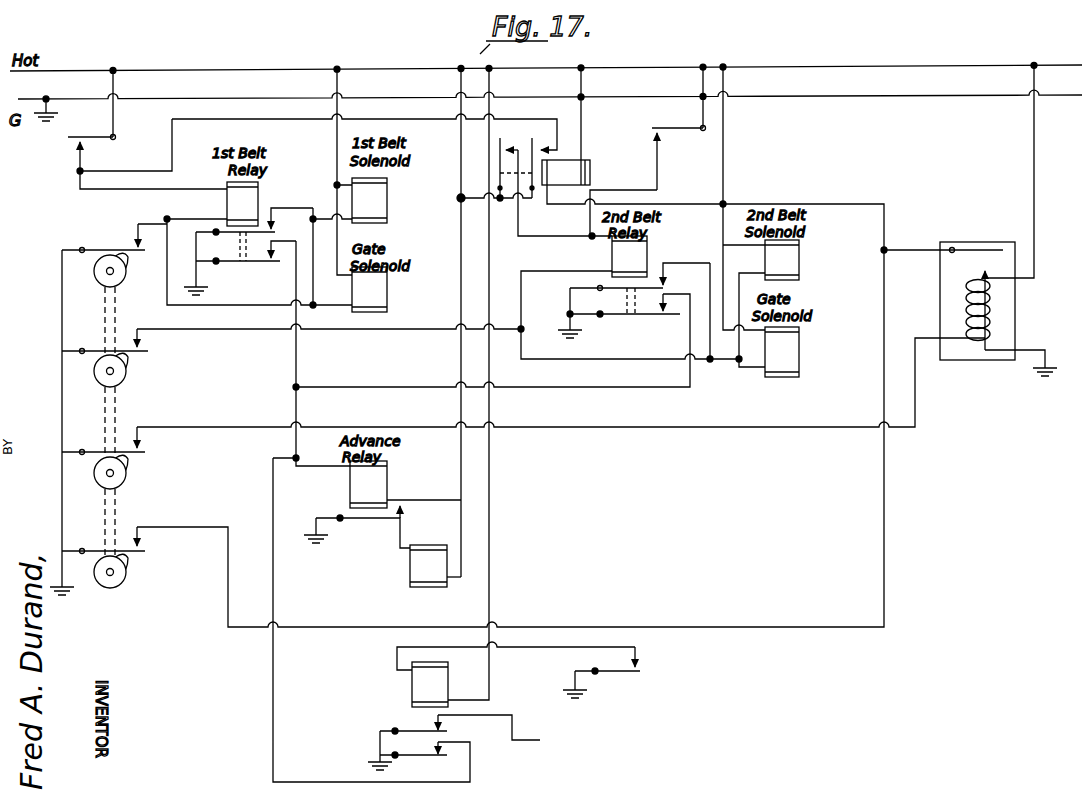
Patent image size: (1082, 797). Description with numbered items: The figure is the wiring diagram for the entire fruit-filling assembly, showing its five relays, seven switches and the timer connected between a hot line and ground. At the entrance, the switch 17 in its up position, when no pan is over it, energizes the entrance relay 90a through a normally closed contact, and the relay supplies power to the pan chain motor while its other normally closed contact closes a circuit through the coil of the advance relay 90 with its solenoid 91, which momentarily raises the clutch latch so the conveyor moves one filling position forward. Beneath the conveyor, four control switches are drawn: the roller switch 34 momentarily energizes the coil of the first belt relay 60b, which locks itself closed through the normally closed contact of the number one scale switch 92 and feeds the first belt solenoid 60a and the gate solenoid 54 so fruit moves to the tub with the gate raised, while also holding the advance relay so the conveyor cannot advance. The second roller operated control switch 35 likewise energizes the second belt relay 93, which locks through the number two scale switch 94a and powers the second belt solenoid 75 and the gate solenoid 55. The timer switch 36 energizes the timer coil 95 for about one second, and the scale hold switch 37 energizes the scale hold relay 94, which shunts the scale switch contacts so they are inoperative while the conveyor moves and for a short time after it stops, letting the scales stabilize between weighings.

The number one scale switch 92 is at (72, 147).
The first belt relay 60b is at (259, 201).
The second solenoid (first belt solenoid) 60a is at (386, 199).
The gate solenoid 54 is at (378, 297).
The scale hold relay 94 is at (577, 177).
The number two scale switch 94a is at (660, 137).
The second belt relay 93 is at (640, 258).
The solenoid 75 is at (797, 265).
The gate solenoid 55 is at (800, 348).
The timer coil 95 is at (993, 319).
The roller switch 34 is at (100, 279).
The second roller operated control switch 35 is at (100, 384).
The timer switch 36 is at (100, 482).
The scale hold switch 37 is at (102, 591).
The advance relay 90 is at (350, 488).
The solenoid 91 is at (410, 563).
The entrance relay 90a is at (418, 681).
The switch 17 is at (638, 666).